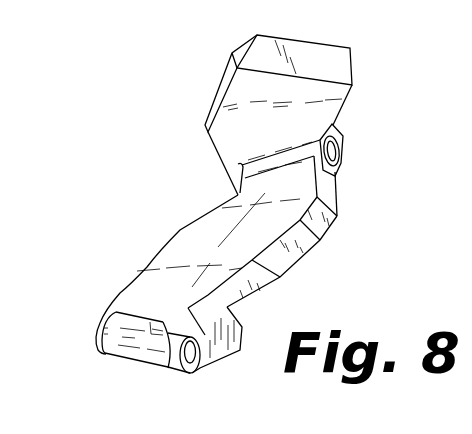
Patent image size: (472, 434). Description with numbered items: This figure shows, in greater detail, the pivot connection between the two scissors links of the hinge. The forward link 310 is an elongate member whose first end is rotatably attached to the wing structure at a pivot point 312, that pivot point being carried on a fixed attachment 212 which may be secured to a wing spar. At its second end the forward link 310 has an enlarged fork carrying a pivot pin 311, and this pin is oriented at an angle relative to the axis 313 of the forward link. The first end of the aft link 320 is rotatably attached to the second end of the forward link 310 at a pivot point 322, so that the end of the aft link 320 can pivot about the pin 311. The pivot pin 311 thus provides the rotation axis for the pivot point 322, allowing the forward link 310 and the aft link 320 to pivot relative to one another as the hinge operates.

The fixed attachment 212 is at (358, 111).
The forward link 310 is at (168, 220).
The pivot pin 311 is at (205, 371).
The pivot point 312 is at (355, 162).
The axis of the forward link 313 is at (243, 248).
The aft link 320 is at (119, 369).
The pivot point 322 is at (80, 322).